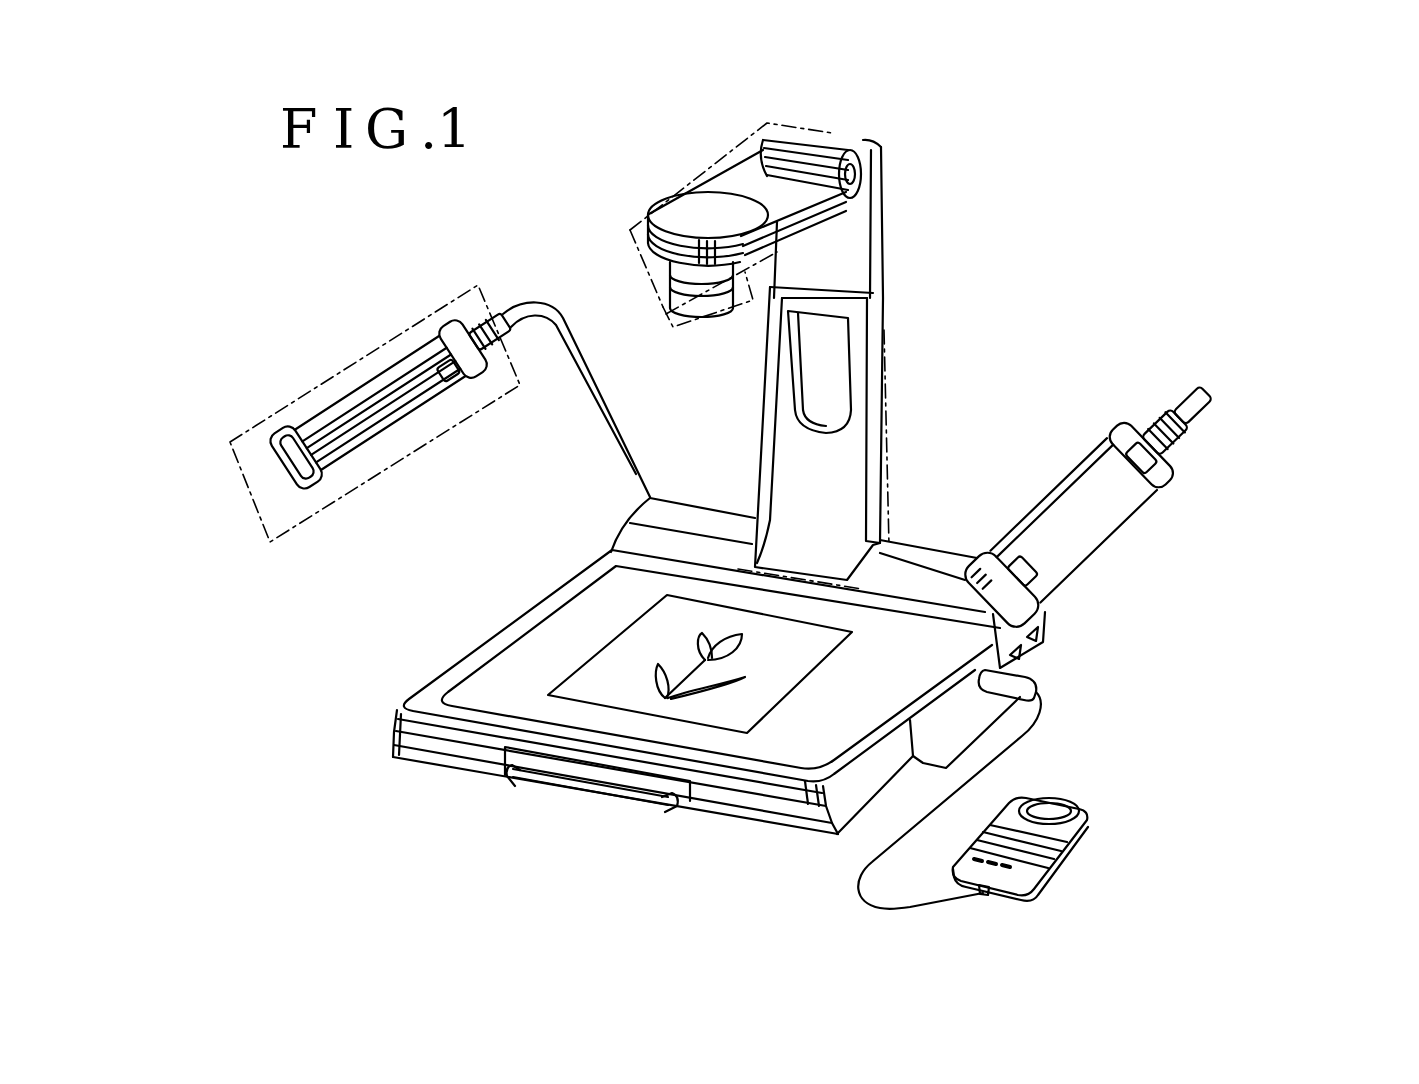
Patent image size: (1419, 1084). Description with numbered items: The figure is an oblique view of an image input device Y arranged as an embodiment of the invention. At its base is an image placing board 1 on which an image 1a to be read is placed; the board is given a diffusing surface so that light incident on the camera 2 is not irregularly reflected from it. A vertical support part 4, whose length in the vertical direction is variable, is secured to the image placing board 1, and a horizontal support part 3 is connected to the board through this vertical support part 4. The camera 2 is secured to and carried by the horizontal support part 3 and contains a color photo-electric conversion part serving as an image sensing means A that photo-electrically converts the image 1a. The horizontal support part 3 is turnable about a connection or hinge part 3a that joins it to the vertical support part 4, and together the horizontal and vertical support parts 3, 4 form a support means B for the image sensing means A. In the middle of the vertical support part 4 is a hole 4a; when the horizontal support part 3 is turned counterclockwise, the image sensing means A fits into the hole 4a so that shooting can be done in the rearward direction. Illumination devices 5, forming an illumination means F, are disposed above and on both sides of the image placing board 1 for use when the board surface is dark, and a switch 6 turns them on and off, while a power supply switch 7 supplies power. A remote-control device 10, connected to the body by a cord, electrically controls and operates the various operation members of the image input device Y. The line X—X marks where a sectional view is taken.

The image placing board 1 is at (753, 753).
The image 1a is at (583, 680).
The camera 2 is at (663, 306).
The horizontal support part 3 is at (748, 178).
The connection (hinge) part 3a is at (838, 134).
The vertical support part 4 is at (873, 344).
The hole 4a is at (823, 392).
The illumination device 5 is at (372, 387).
The switch 6 is at (1022, 660).
The power supply switch 7 is at (1037, 638).
The remote-control device 10 is at (1047, 867).
The image sensing means A is at (690, 325).
The support means B is at (883, 283).
The illumination means F is at (380, 473).
The line X— X is at (877, 500).
The image input device Y is at (925, 227).